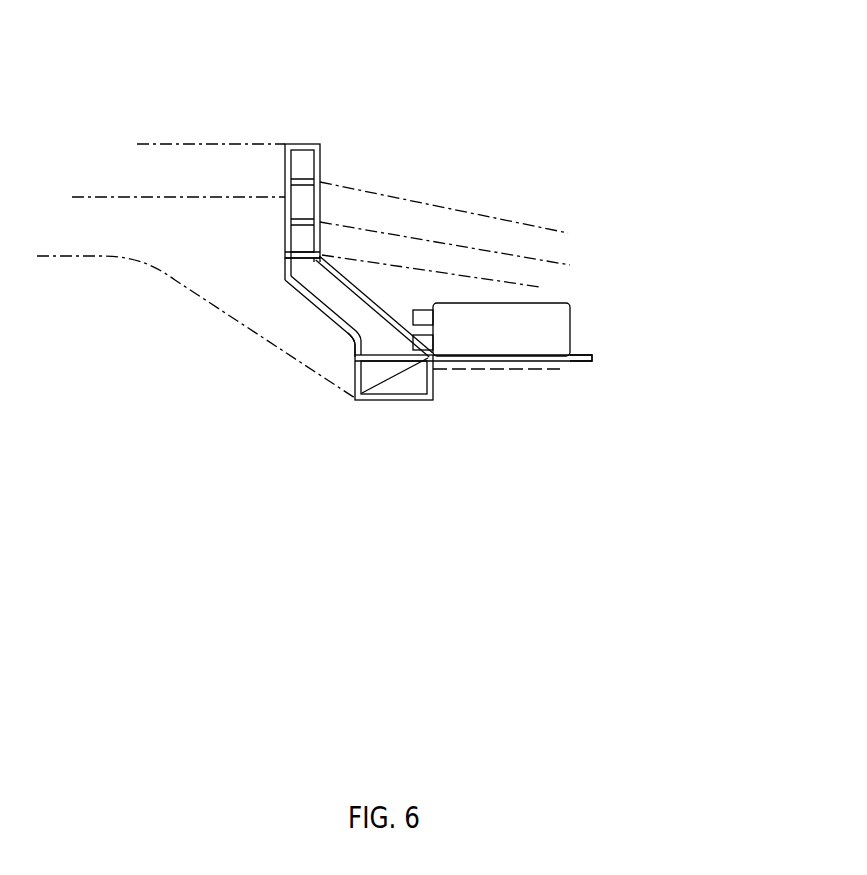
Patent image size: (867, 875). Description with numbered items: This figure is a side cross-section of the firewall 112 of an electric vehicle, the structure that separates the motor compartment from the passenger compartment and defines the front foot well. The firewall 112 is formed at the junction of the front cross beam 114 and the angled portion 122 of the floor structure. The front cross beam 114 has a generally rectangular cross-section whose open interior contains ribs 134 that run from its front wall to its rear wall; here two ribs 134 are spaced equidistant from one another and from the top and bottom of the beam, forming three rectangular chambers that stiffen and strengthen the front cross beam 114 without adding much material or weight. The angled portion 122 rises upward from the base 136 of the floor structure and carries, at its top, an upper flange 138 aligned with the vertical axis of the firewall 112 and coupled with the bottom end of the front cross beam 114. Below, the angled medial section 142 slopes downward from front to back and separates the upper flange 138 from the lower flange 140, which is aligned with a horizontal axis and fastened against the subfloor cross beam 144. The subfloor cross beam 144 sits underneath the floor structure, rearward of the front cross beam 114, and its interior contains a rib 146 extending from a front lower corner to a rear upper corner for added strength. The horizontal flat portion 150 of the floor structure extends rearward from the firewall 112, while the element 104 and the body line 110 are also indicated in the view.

The motor assembly 104 is at (538, 336).
The vehicle body panel 110 is at (502, 220).
The firewall 112 is at (248, 230).
The front cross beam 114 is at (316, 154).
The angled portion 122 is at (318, 305).
The ribs 134 is at (302, 182).
The base 136 is at (458, 358).
The upper flange 138 is at (283, 253).
The lower flange 140 is at (355, 357).
The angled medial section 142 is at (347, 307).
The subfloor cross beam 144 is at (412, 402).
The rib 146 is at (382, 388).
The horizontal flat portion 150 is at (577, 357).